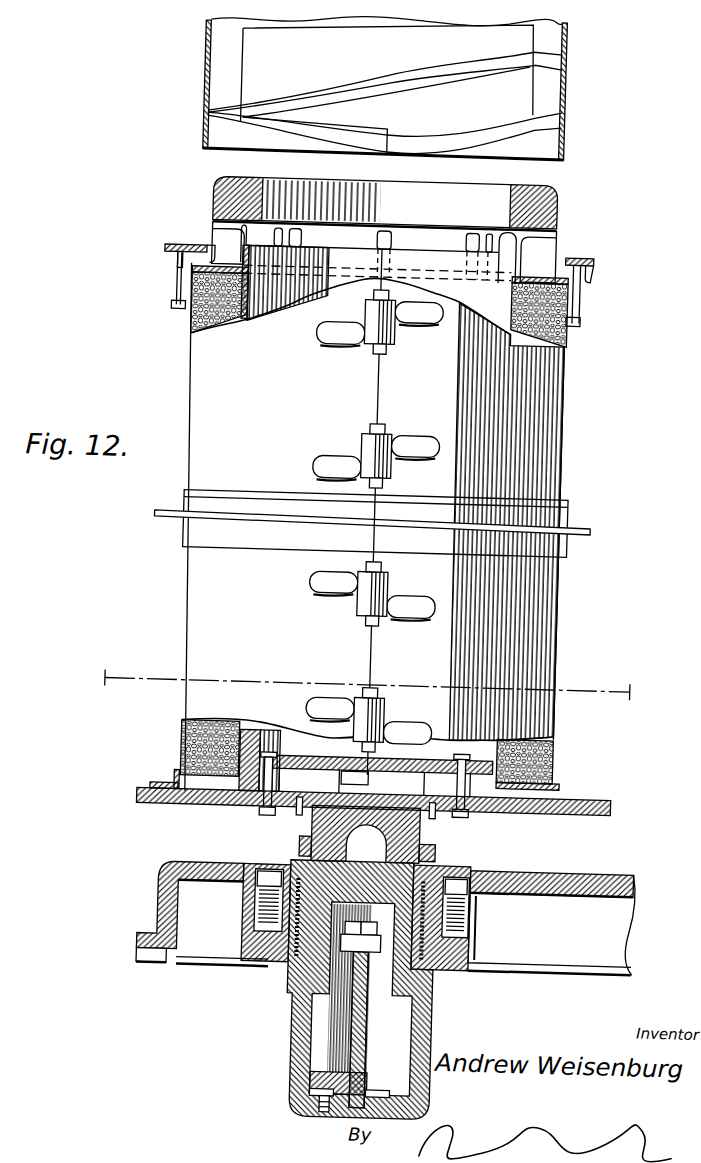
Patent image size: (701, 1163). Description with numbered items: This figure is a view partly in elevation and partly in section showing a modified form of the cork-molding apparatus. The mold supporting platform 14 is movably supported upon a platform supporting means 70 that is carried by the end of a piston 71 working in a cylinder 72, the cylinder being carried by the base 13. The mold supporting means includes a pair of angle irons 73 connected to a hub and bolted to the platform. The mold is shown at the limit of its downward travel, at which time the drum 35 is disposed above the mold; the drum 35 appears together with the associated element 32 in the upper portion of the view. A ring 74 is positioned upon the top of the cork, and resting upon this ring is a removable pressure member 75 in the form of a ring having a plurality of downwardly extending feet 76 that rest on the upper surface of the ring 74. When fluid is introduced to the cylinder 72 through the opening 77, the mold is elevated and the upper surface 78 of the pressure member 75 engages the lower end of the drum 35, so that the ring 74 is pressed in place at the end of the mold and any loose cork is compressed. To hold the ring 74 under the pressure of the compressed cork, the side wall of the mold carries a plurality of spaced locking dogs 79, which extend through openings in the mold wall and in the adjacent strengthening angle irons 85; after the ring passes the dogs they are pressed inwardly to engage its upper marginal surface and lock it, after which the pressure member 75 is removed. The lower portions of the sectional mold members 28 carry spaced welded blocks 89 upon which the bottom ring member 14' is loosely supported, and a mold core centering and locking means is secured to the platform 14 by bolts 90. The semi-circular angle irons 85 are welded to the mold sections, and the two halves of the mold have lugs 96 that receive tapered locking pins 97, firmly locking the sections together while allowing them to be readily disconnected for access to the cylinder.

The base 13 is at (556, 933).
The mold supporting platform 14 is at (372, 819).
The bottom ring member 14' is at (340, 797).
The sectional mold members 28 is at (404, 513).
The casing 32 is at (556, 118).
The drum 35 is at (386, 87).
The platform supporting means 70 is at (409, 819).
The piston 71 is at (309, 1044).
The cylinder 72 is at (446, 1028).
The angle irons 73 is at (305, 816).
The ring 74 is at (215, 265).
The pressure member 75 is at (549, 198).
The feet 76 is at (541, 247).
The opening 77 is at (346, 1117).
The upper surface 78 is at (432, 195).
The locking dogs 79 is at (176, 286).
The strengthening angle irons 85 is at (163, 251).
The blocks 89 is at (186, 800).
The bolts 90 is at (479, 813).
The lugs 96 is at (381, 459).
The tapered locking pins 97 is at (370, 432).